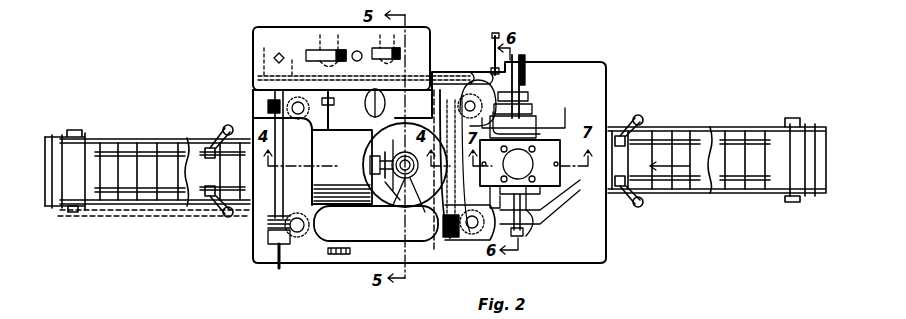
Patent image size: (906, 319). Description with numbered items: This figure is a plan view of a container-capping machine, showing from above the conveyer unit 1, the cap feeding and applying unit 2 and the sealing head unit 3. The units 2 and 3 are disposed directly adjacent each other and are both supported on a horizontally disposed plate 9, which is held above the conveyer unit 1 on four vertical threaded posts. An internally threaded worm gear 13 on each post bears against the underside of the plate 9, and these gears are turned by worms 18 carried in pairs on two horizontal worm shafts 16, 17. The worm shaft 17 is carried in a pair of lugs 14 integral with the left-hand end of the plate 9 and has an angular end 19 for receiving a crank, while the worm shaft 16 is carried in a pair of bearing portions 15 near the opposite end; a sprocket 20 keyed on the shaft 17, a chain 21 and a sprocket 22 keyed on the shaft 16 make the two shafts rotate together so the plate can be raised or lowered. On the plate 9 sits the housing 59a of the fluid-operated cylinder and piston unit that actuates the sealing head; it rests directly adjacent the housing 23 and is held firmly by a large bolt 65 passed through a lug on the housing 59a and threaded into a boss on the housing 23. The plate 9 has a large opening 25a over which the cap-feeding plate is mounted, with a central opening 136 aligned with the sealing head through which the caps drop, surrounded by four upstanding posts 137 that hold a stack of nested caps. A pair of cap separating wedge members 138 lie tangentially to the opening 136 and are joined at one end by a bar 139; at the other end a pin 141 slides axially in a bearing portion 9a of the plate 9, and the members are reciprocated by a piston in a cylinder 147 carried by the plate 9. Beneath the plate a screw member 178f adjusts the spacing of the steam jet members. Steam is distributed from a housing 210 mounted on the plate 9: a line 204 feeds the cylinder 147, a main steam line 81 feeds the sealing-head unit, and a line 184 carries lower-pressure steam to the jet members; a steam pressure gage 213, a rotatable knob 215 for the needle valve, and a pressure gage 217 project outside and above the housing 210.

The conveyer unit 1 is at (668, 127).
The cap feeding and applying unit 2 is at (497, 197).
The sealing head unit 3 is at (398, 186).
The plate 9 is at (553, 106).
The bearing portion 9a is at (542, 218).
The worm gear 13 is at (314, 226).
The lugs 14 is at (268, 240).
The bearing portions 15 is at (447, 100).
The worm shaft 16 is at (447, 128).
The worm shaft 17 is at (275, 218).
The worms 18 is at (268, 107).
The angular end 19 is at (279, 266).
The sprocket 20 is at (270, 55).
The chain 21 is at (293, 61).
The sprocket 22 is at (468, 74).
The housing 23 is at (410, 178).
The opening 25a is at (540, 212).
The housing 59a is at (333, 140).
The bolt 65 is at (372, 158).
The main steam line 81 is at (334, 98).
The opening 136 is at (534, 166).
The posts 137 is at (540, 190).
The cap separating wedge members 138 is at (530, 128).
The bar 139 is at (530, 112).
The pin 141 is at (522, 200).
The cylinder 147 is at (522, 70).
The screw member 178f is at (339, 255).
The line 184 is at (372, 92).
The line 204 is at (495, 34).
The housing 210 is at (425, 28).
The steam pressure gage 213 is at (318, 50).
The rotatable knob 215 is at (355, 51).
The pressure gage 217 is at (402, 49).